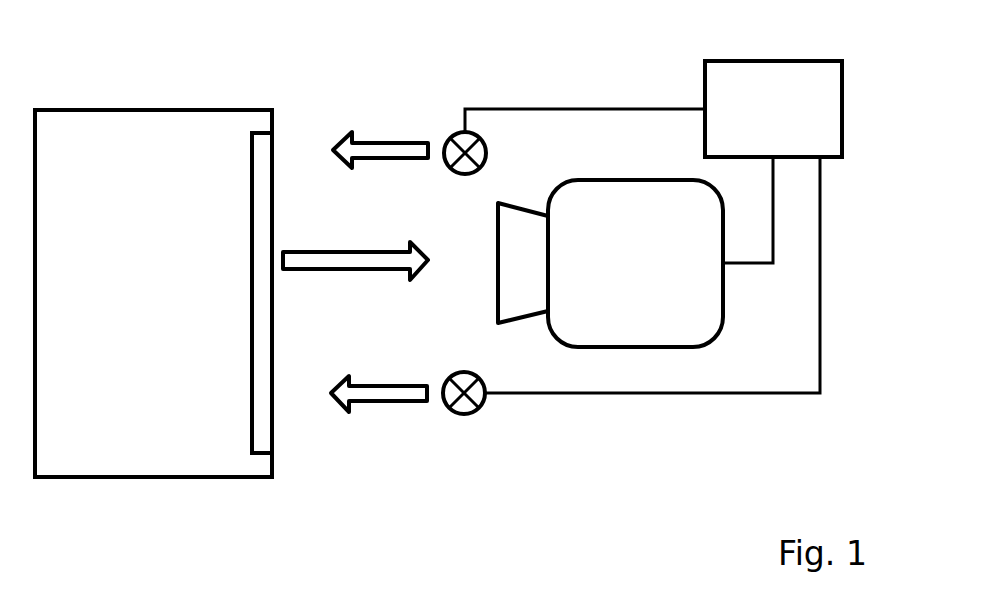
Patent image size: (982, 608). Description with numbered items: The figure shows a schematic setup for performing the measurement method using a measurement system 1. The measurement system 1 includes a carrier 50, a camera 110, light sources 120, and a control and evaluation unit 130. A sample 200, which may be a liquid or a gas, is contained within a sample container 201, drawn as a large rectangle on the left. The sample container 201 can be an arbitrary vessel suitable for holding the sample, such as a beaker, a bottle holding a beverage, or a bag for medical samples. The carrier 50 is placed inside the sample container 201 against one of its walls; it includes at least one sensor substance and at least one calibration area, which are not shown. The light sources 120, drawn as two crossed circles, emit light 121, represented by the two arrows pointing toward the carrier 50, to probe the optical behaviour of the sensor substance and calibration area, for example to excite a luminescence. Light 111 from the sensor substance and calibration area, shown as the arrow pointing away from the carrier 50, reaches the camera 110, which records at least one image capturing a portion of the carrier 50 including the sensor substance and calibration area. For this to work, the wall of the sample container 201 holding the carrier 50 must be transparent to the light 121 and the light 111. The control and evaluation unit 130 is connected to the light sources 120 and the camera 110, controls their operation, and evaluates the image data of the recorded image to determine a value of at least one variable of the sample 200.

The measurement system 1 is at (840, 288).
The carrier 50 is at (248, 177).
The camera 110 is at (665, 278).
The light from the sensor substance and calibration area 111 is at (297, 250).
The light sources 120 is at (487, 157).
The emitted light 121 is at (383, 141).
The control and evaluation unit 130 is at (798, 123).
The sample 200 is at (172, 442).
The sample container 201 is at (83, 108).